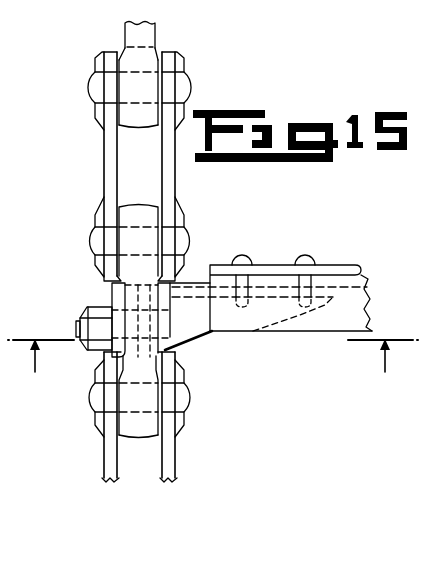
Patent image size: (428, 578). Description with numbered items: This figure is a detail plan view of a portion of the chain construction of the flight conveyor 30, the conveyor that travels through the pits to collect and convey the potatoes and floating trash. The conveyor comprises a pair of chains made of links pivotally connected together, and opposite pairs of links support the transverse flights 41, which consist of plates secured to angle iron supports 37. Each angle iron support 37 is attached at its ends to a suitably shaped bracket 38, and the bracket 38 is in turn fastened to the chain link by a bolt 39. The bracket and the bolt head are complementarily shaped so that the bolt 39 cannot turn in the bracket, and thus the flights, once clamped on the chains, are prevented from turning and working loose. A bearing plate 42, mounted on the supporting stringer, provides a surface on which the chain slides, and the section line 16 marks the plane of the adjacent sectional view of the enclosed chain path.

The section line 16 is at (213, 366).
The flight conveyor 30 is at (107, 180).
The angle iron support 37 is at (320, 332).
The bracket 38 is at (204, 341).
The bolt 39 is at (77, 323).
The transverse flight 41 is at (337, 268).
The bearing plate 42 is at (427, 232).